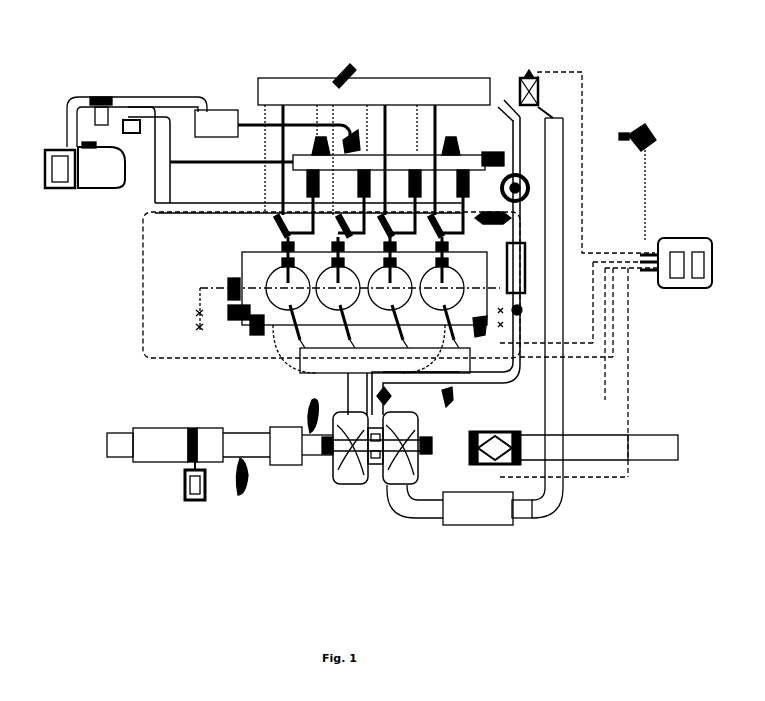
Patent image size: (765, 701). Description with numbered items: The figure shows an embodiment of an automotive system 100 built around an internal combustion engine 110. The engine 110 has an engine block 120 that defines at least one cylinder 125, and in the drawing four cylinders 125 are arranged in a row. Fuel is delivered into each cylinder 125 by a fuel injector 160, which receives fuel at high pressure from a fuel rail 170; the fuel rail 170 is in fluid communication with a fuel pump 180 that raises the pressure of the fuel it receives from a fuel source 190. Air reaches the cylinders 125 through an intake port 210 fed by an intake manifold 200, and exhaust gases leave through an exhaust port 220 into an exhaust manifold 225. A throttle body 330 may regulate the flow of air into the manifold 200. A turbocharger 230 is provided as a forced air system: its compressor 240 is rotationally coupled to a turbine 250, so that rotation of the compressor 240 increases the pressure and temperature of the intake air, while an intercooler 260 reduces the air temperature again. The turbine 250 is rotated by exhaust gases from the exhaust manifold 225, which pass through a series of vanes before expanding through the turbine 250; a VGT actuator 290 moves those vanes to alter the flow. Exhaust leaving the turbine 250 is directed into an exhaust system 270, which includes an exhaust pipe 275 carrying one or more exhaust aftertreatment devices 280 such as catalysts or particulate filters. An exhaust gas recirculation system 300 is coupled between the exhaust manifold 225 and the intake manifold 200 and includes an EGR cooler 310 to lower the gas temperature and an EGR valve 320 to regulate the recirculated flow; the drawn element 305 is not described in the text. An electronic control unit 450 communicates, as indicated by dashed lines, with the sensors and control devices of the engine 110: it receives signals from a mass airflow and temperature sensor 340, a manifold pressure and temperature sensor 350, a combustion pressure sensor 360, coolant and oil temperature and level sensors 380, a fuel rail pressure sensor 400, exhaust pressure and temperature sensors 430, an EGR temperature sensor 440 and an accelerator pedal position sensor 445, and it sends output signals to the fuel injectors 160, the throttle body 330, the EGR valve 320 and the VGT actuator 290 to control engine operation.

The automotive system 100 is at (192, 66).
The internal combustion engine 110 is at (449, 70).
The engine block 120 is at (273, 256).
The cylinder 125 is at (458, 270).
The fuel injector 160 is at (278, 236).
The fuel rail 170 is at (297, 167).
The fuel pump 180 is at (222, 108).
The fuel source 190 is at (100, 178).
The intake manifold 200 is at (381, 94).
The intake port 210 is at (243, 272).
The exhaust port 220 is at (278, 330).
The exhaust manifold 225 is at (307, 410).
The turbocharger 230 is at (352, 488).
The compressor 240 is at (396, 480).
The turbine 250 is at (343, 472).
The intercooler 260 is at (497, 512).
The exhaust system 270 is at (160, 418).
The exhaust pipe 275 is at (118, 450).
The exhaust aftertreatment device 280 is at (155, 448).
The VGT actuator 290 is at (393, 402).
The exhaust gas recirculation system 300 is at (494, 390).
The EGR cooler 305 is at (563, 413).
The EGR cooler 310 is at (530, 310).
The EGR valve 320 is at (528, 183).
The throttle body 330 is at (530, 70).
The mass airflow and temperature sensor 340 is at (486, 466).
The manifold pressure and temperature sensor 350 is at (338, 70).
The combustion pressure sensor 360 is at (350, 376).
The coolant and oil temperature and level sensors 380 is at (254, 314).
The fuel rail pressure sensor 400 is at (518, 178).
The exhaust pressure and temperature sensors 430 is at (243, 472).
The EGR temperature sensor 440 is at (527, 210).
The accelerator pedal position sensor 445 is at (650, 124).
The electronic control unit 450 is at (686, 237).